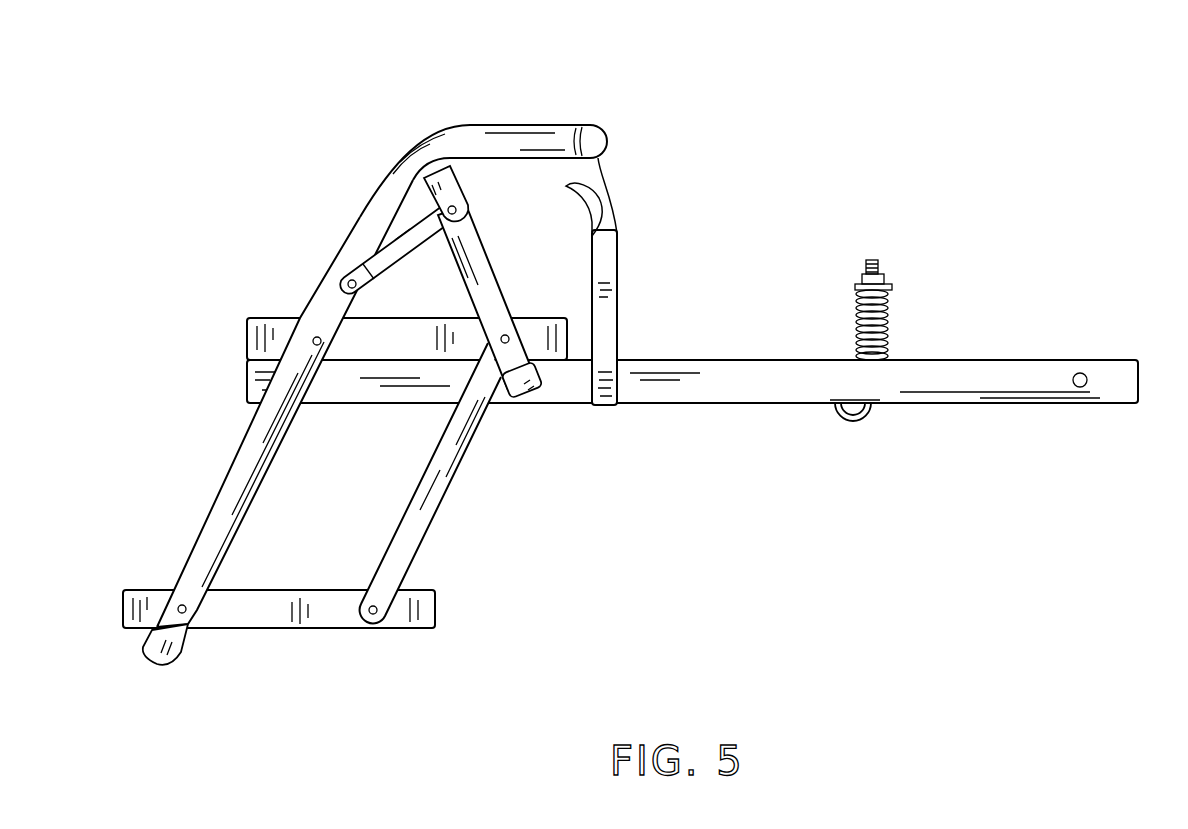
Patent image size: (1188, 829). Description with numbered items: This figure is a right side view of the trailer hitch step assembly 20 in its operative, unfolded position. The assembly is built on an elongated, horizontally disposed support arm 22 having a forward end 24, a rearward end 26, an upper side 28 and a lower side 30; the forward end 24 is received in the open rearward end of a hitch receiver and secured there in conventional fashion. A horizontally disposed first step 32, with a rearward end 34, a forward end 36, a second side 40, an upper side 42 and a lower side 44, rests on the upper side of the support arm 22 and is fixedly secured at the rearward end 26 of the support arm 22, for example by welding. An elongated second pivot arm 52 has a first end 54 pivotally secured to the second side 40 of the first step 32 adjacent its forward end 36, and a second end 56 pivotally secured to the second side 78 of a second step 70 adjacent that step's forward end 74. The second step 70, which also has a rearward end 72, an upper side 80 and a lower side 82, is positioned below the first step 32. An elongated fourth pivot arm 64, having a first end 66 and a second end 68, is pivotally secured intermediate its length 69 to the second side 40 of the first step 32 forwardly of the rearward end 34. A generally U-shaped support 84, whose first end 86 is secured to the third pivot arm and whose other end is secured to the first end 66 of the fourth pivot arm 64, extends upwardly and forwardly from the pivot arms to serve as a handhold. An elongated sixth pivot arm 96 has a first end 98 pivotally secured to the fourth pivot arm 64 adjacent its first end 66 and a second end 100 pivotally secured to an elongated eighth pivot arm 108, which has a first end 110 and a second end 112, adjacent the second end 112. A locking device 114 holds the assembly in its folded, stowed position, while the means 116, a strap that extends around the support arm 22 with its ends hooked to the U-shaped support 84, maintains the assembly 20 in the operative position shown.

The trailer hitch step assembly 20 is at (529, 100).
The support arm 22 is at (978, 345).
The forward end 24 is at (1140, 378).
The rearward end 26 is at (247, 378).
The upper side 28 is at (743, 360).
The lower side 30 is at (778, 404).
The first step 32 is at (280, 305).
The rearward end 34 is at (247, 348).
The forward end 36 is at (567, 340).
The second side 40 is at (419, 345).
The upper side 42 is at (527, 318).
The lower side 44 is at (407, 362).
The second pivot arm 52 is at (455, 489).
The first end 54 is at (497, 334).
The second end 56 is at (386, 613).
The fourth pivot arm 64 is at (237, 445).
The first end 66 is at (405, 195).
The second end 68 is at (148, 662).
The intermediate its length 69 is at (319, 348).
The second step 70 is at (334, 578).
The rearward end 72 is at (123, 612).
The forward end 74 is at (436, 600).
The second side 78 is at (318, 620).
The upper side 80 is at (248, 590).
The lower side 82 is at (267, 630).
The U-shaped support 84 is at (484, 110).
The first end 86 is at (393, 170).
The sixth pivot arm 96 is at (395, 224).
The first end 98 is at (348, 273).
The second end 100 is at (458, 210).
The eighth pivot arm 108 is at (510, 260).
The first end 110 is at (527, 391).
The second end 112 is at (437, 172).
The locking device 114 is at (888, 312).
The means for maintaining the assembly in its operative position 116 is at (612, 295).